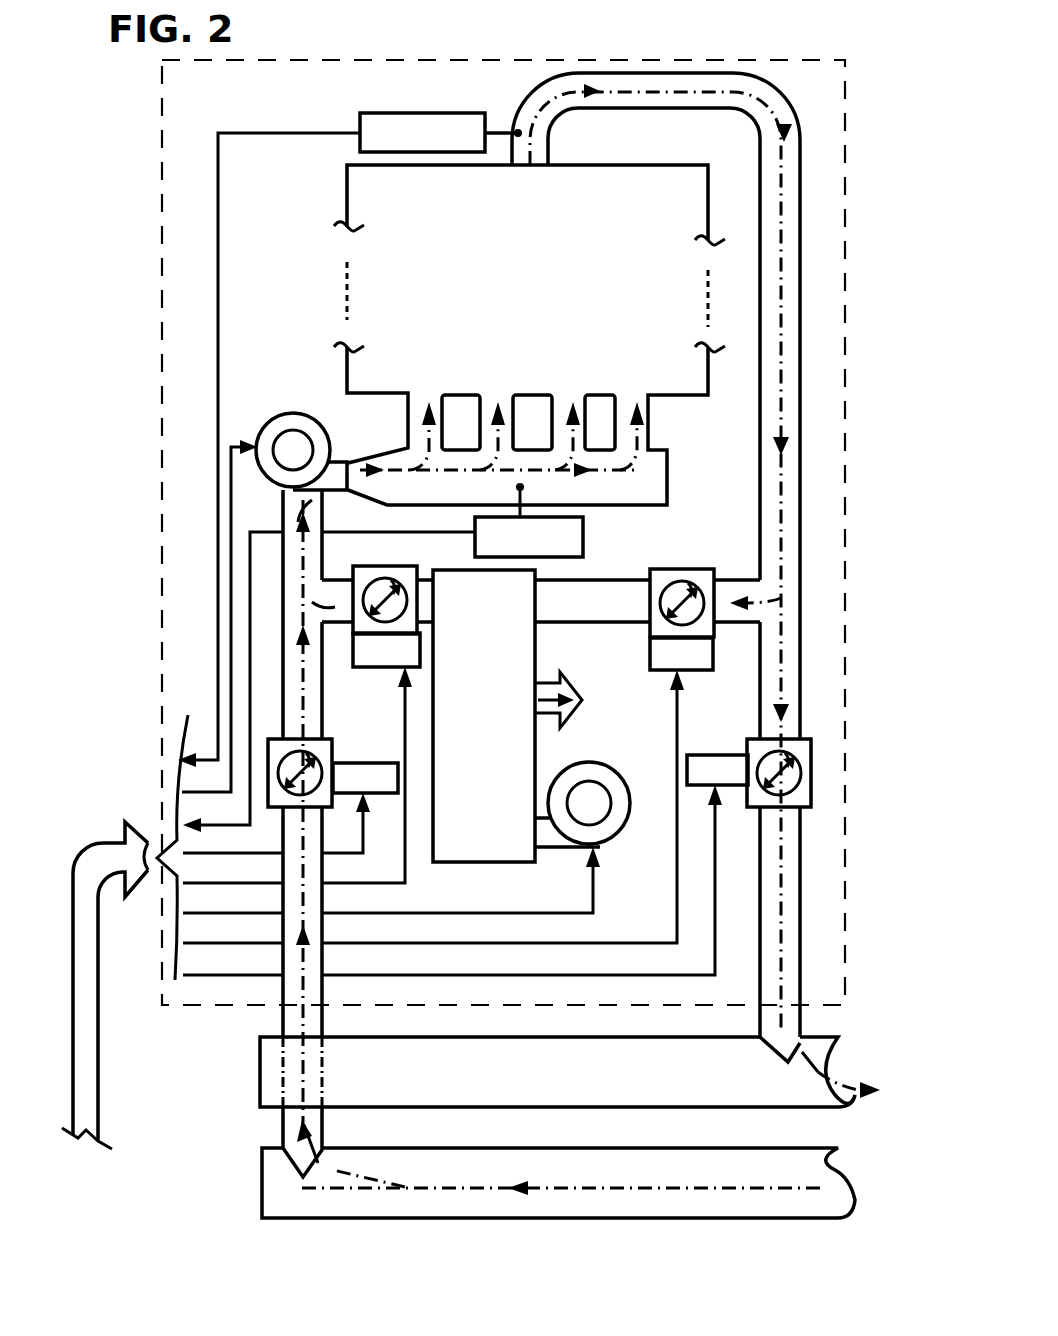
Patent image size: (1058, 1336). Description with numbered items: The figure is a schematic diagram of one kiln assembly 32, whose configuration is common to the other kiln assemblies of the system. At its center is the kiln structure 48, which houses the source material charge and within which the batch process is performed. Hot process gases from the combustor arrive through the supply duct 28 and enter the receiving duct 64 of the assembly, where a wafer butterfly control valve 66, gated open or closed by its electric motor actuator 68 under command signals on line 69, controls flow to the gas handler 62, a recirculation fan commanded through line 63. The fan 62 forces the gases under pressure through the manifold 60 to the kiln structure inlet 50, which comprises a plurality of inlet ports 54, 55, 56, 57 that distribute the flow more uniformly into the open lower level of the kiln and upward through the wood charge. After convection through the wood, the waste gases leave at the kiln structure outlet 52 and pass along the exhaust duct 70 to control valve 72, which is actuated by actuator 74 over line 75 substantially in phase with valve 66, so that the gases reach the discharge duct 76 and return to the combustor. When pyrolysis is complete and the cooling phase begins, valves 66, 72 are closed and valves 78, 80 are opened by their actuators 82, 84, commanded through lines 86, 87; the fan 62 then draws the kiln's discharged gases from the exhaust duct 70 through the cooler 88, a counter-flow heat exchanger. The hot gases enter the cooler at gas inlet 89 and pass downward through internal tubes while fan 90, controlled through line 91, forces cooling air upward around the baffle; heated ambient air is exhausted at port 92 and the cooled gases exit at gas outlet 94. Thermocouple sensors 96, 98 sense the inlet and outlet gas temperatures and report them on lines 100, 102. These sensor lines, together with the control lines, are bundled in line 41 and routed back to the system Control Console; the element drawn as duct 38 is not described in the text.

The kiln assembly 32 is at (402, 61).
The thermocouple sensor 98 is at (382, 115).
The kiln structure 48 is at (358, 203).
The kiln structure outlet 52 is at (540, 173).
The exhaust duct 70 is at (674, 555).
The sensor line 102 is at (217, 255).
The gas handler 62 is at (293, 411).
The control line 63 is at (238, 487).
The sensor line 100 is at (250, 567).
The inlet port 54 is at (436, 384).
The inlet port 55 is at (502, 384).
The inlet port 56 is at (569, 384).
The inlet port 57 is at (634, 384).
The kiln structure inlet 50 is at (672, 433).
The manifold 60 is at (542, 426).
The thermocouple sensor 96 is at (584, 540).
The gas outlet 94 is at (425, 578).
The control valve 80 is at (378, 573).
The actuator 84 is at (389, 668).
The control line 87 is at (358, 884).
The cooler 88 is at (208, 883).
The gas inlet 89 is at (538, 596).
The control valve 78 is at (684, 570).
The actuator 82 is at (650, 658).
The control line 86 is at (197, 943).
The port 92 is at (547, 720).
The fan 90 is at (602, 822).
The control line 91 is at (198, 915).
The control valve 72 is at (802, 740).
The actuator 74 is at (707, 770).
The control line 75 is at (227, 980).
The control valve 66 is at (330, 749).
The actuator 68 is at (368, 795).
The control line 69 is at (207, 853).
The receiving duct 64 is at (293, 985).
The line 41 is at (90, 1058).
The exhaust header duct 38 is at (587, 1092).
The supply duct 28 is at (462, 1160).
The discharge duct 76 is at (782, 896).